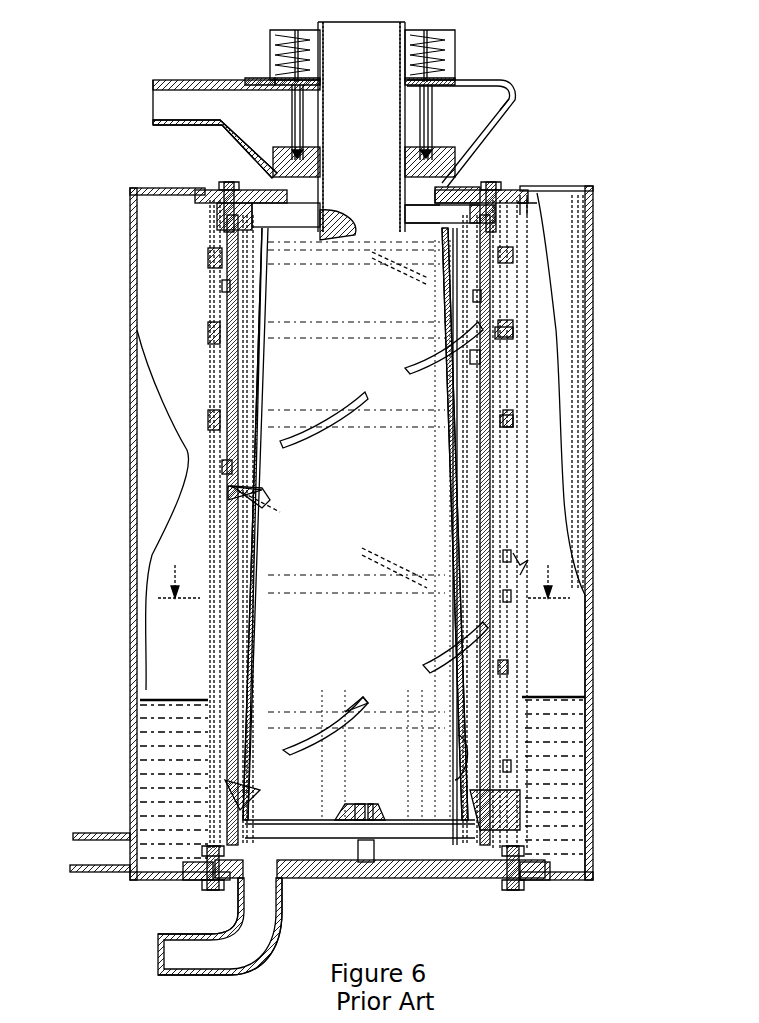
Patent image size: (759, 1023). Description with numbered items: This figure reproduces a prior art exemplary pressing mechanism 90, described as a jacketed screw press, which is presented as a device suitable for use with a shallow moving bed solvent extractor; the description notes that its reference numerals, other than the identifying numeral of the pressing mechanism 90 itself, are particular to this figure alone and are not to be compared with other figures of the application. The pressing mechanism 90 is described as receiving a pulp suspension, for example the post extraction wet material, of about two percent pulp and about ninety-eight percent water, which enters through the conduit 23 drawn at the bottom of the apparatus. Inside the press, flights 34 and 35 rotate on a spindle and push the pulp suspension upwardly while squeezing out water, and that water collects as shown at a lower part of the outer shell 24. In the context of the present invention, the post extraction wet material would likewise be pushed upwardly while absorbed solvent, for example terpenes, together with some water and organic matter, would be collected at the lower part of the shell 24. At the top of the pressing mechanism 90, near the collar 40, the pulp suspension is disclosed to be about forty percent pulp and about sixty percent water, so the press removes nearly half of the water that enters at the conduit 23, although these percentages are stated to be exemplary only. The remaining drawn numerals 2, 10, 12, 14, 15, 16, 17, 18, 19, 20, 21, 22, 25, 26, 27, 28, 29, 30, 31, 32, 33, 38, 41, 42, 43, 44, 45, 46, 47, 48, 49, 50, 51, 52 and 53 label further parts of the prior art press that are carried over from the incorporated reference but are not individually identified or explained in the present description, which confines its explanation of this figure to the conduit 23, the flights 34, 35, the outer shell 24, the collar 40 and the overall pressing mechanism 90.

The section line 2 is at (364, 570).
The centrifuge drum 10 is at (355, 524).
The screen layer 12 is at (230, 380).
The screen support ring 14 is at (497, 214).
The spacer 15 is at (230, 350).
The spacer ring 16 is at (514, 330).
The screen 17 is at (215, 290).
The support ring 18 is at (528, 190).
The bolt 19 is at (226, 180).
The bottom plate 20 is at (428, 880).
The bolt 21 is at (205, 890).
The drum bottom 22 is at (390, 852).
The conduit 23 is at (280, 940).
The outer shell 24 is at (594, 549).
The housing 25 is at (590, 190).
The liquid collecting chamber 26 is at (135, 880).
The discharge pipe 27 is at (80, 858).
The deflector 28 is at (455, 745).
The hub 29 is at (340, 812).
The bottom outlet 30 is at (356, 851).
The hub ring 31 is at (365, 812).
The top ring 32 is at (312, 222).
The feed tube 33 is at (361, 127).
The flight 34 is at (425, 352).
The flight 35 is at (358, 410).
The vane 38 is at (222, 466).
The collar 40 is at (440, 150).
The pipe assembly 41 is at (523, 99).
The pipe 42 is at (505, 115).
The pipe bend 43 is at (508, 82).
The flange 44 is at (258, 188).
The flange 45 is at (450, 188).
The block 46 is at (285, 155).
The rod 47 is at (292, 104).
The nut 48 is at (452, 75).
The spring 49 is at (270, 38).
The plate 50 is at (255, 78).
The nut 51 is at (268, 78).
The spring 52 is at (455, 34).
The housing cover 53 is at (160, 122).
The pressing mechanism 90 is at (128, 171).